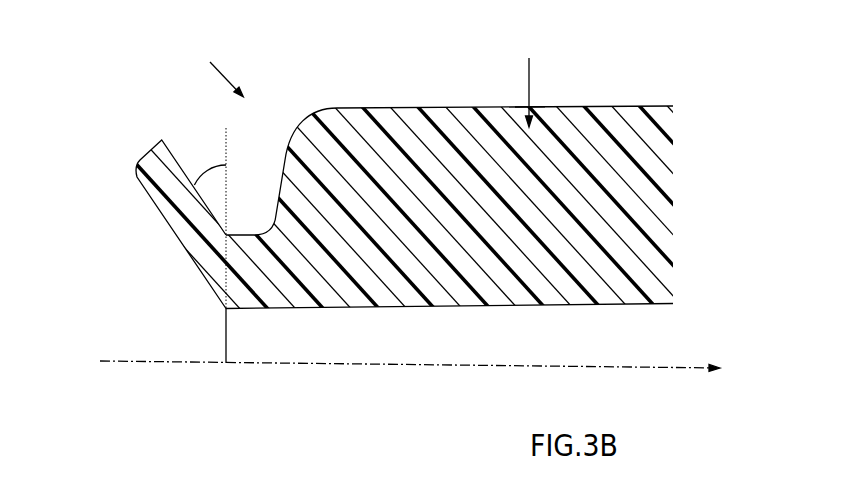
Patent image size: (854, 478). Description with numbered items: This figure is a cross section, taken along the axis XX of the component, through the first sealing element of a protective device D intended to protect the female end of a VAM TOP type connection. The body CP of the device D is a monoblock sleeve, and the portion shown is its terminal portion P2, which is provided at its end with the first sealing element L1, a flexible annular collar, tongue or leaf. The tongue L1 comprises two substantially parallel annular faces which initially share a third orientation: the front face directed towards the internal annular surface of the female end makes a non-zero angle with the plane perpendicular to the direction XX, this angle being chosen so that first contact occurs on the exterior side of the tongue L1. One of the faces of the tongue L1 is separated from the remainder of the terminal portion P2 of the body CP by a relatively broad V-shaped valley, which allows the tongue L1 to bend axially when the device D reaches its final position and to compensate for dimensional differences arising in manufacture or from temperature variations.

The protective device D is at (214, 66).
The first sealing element L1 is at (148, 200).
The body CP is at (390, 107).
The terminal portion P2 is at (529, 80).
The axis of the component XX is at (685, 366).